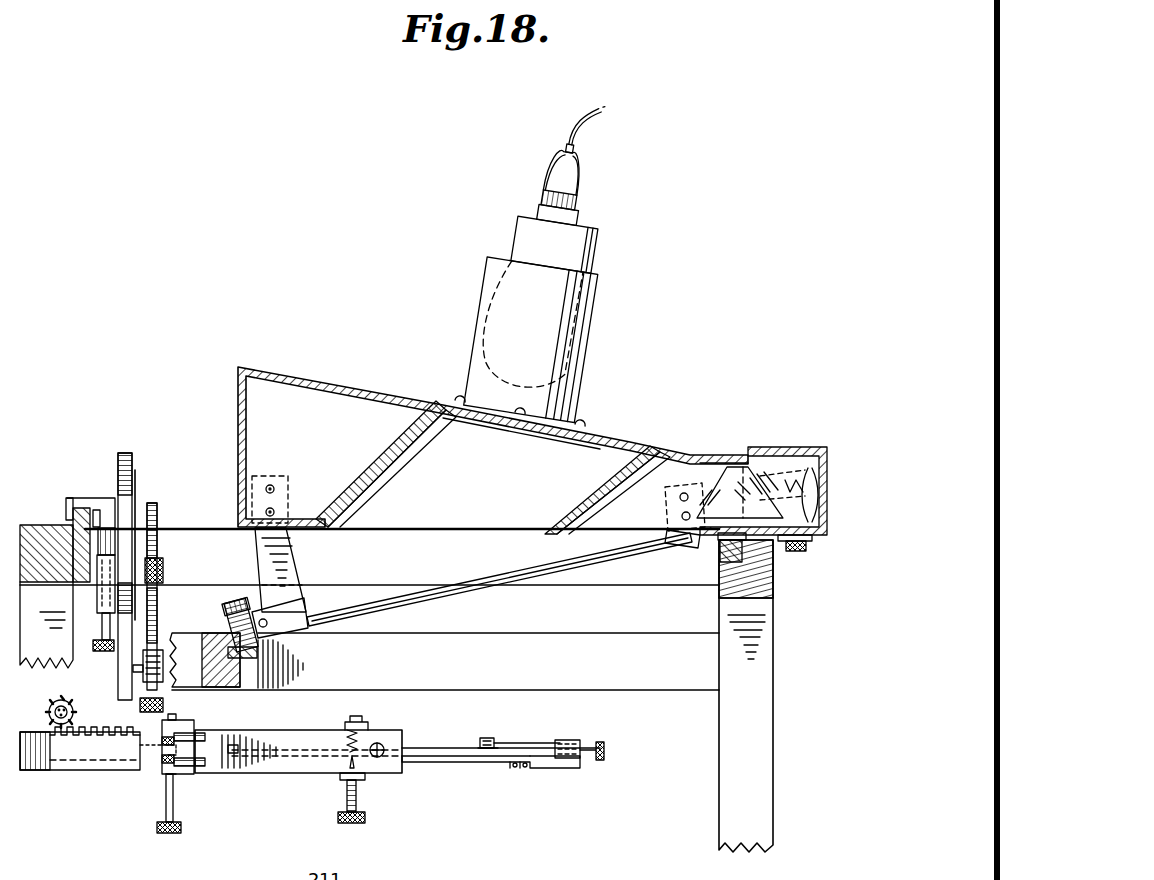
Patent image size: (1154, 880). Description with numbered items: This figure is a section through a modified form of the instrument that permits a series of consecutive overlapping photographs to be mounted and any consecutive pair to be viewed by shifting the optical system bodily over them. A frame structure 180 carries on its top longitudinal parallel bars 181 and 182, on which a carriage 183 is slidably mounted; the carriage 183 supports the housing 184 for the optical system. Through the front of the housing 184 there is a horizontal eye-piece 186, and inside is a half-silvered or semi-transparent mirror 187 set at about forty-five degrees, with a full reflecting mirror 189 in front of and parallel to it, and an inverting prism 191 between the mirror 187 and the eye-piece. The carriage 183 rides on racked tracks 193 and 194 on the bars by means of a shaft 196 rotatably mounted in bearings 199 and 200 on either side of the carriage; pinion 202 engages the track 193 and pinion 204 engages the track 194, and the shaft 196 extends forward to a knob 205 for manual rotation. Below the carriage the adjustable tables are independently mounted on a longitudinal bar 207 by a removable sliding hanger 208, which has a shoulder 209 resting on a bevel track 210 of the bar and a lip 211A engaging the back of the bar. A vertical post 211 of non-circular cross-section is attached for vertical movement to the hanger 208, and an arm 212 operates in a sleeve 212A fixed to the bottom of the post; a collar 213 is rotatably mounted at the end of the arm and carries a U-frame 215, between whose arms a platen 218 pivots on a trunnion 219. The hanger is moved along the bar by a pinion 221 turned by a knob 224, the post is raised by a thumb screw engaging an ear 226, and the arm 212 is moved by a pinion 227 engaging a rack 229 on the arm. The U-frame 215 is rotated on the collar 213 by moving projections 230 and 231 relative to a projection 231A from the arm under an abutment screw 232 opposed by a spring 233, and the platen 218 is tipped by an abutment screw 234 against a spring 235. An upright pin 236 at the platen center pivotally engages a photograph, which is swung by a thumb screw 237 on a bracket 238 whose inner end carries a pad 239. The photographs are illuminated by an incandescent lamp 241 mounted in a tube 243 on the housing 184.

The frame structure 180 is at (773, 790).
The longitudinal parallel bar 181 is at (773, 580).
The longitudinal parallel bar 182 is at (200, 648).
The carriage 183 is at (306, 540).
The housing 184 is at (322, 367).
The eye-piece 186 is at (795, 466).
The half-silvered mirror 187 is at (580, 510).
The mirror 189 is at (374, 470).
The inverting prism 191 is at (722, 467).
The racked track 193 is at (258, 653).
The racked track 194 is at (720, 556).
The shaft 196 is at (470, 583).
The bearing 199 is at (666, 537).
The bearing 200 is at (318, 625).
The pinion 202 is at (234, 600).
The pinion 204 is at (717, 550).
The knob 205 is at (803, 543).
The longitudinal bar 207 is at (46, 596).
The sliding hanger 208 is at (72, 506).
The shoulder 209 is at (85, 510).
The bevel track 210 is at (95, 510).
The vertical post 211 is at (136, 470).
The lip 211A is at (66, 515).
The arm 212 is at (42, 770).
The sleeve 212A is at (80, 770).
The collar 213 is at (198, 776).
The U-frame 215 is at (398, 783).
The platen 218 is at (440, 760).
The trunnion 219 is at (403, 748).
The pinion 221 is at (138, 530).
The knob 224 is at (92, 645).
The ear 226 is at (160, 558).
The pinion 227 is at (140, 702).
The rack 229 is at (49, 711).
The projection 230 is at (176, 720).
The projection 231 is at (170, 777).
The projection 231A is at (160, 770).
The abutment screw 232 is at (176, 819).
The spring 233 is at (196, 734).
The abutment screw 234 is at (346, 802).
The spring 235 is at (344, 738).
The upright pin 236 is at (381, 742).
The thumb screw 237 is at (605, 750).
The bracket 238 is at (565, 740).
The pad 239 is at (486, 738).
The incandescent lamp 241 is at (498, 305).
The tube 243 is at (590, 342).